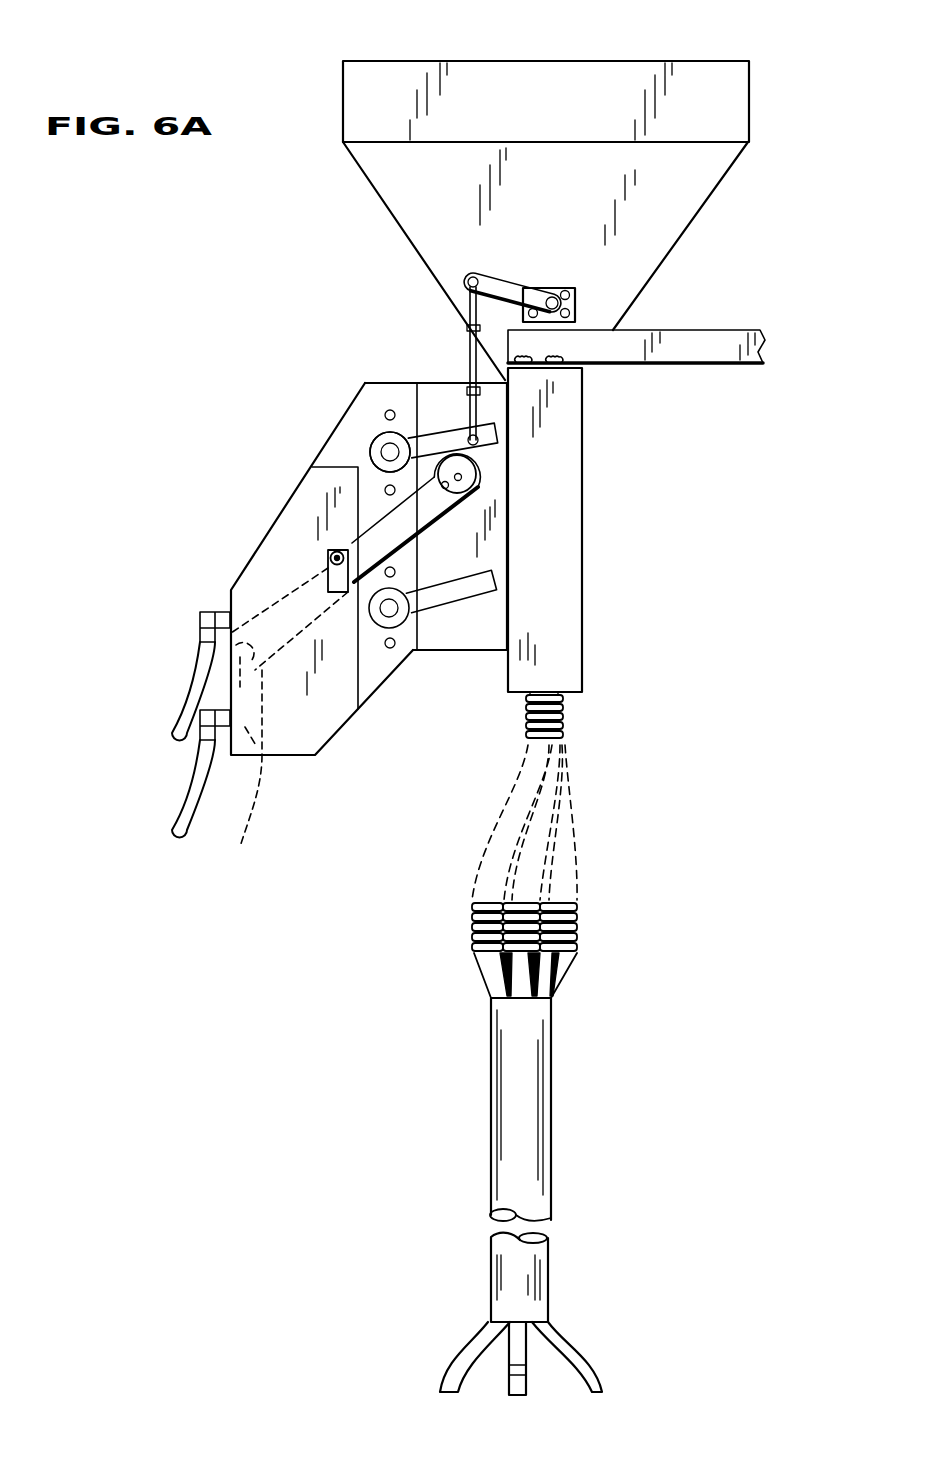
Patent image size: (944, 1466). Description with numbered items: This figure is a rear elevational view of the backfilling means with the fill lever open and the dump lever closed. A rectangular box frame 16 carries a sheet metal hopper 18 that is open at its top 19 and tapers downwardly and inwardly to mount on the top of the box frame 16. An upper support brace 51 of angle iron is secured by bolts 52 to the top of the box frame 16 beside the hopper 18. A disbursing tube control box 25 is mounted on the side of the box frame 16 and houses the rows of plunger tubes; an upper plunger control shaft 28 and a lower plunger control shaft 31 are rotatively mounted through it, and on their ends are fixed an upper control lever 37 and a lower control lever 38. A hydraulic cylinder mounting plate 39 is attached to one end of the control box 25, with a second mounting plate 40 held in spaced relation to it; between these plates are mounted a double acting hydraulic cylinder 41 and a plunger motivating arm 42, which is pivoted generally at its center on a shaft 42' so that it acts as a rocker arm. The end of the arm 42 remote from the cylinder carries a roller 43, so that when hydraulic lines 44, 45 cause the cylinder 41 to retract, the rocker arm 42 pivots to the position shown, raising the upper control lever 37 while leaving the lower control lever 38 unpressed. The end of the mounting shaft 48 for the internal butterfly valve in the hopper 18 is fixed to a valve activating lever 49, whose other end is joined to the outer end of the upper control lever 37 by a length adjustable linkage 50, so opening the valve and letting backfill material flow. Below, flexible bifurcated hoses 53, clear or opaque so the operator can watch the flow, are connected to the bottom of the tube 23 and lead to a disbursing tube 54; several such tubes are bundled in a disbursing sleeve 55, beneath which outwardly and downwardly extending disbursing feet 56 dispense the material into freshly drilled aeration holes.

The top of hopper 19 is at (600, 60).
The hopper 18 is at (423, 170).
The valve activating lever 49 is at (497, 290).
The mounting shaft 48 is at (563, 288).
The length adjustable linkage 50 is at (470, 347).
The upper support brace 51 is at (687, 345).
The bolts 52 is at (557, 355).
The rectangular box frame 16 is at (555, 465).
The upper control lever 37 is at (440, 450).
The hydraulic cylinder mounting plate 39 is at (350, 457).
The upper plunger control shaft 28 is at (390, 450).
The second mounting plate 40 is at (303, 730).
The double acting hydraulic cylinder 41 is at (237, 824).
The roller 43 is at (477, 483).
The plunger motivating arm 42 is at (343, 510).
The shaft 42' is at (243, 528).
The lower plunger control shaft 31 is at (388, 612).
The lower control lever 38 is at (470, 598).
The disbursing tube control box 25 is at (437, 635).
The hydraulic line 44 is at (192, 686).
The hydraulic line 45 is at (190, 800).
The tube 23 is at (583, 690).
The flexible bifurcated hoses 53 is at (560, 832).
The disbursing tube 54 is at (500, 973).
The disbursing sleeve 55 is at (527, 1052).
The disbursing feet 56 is at (520, 1352).